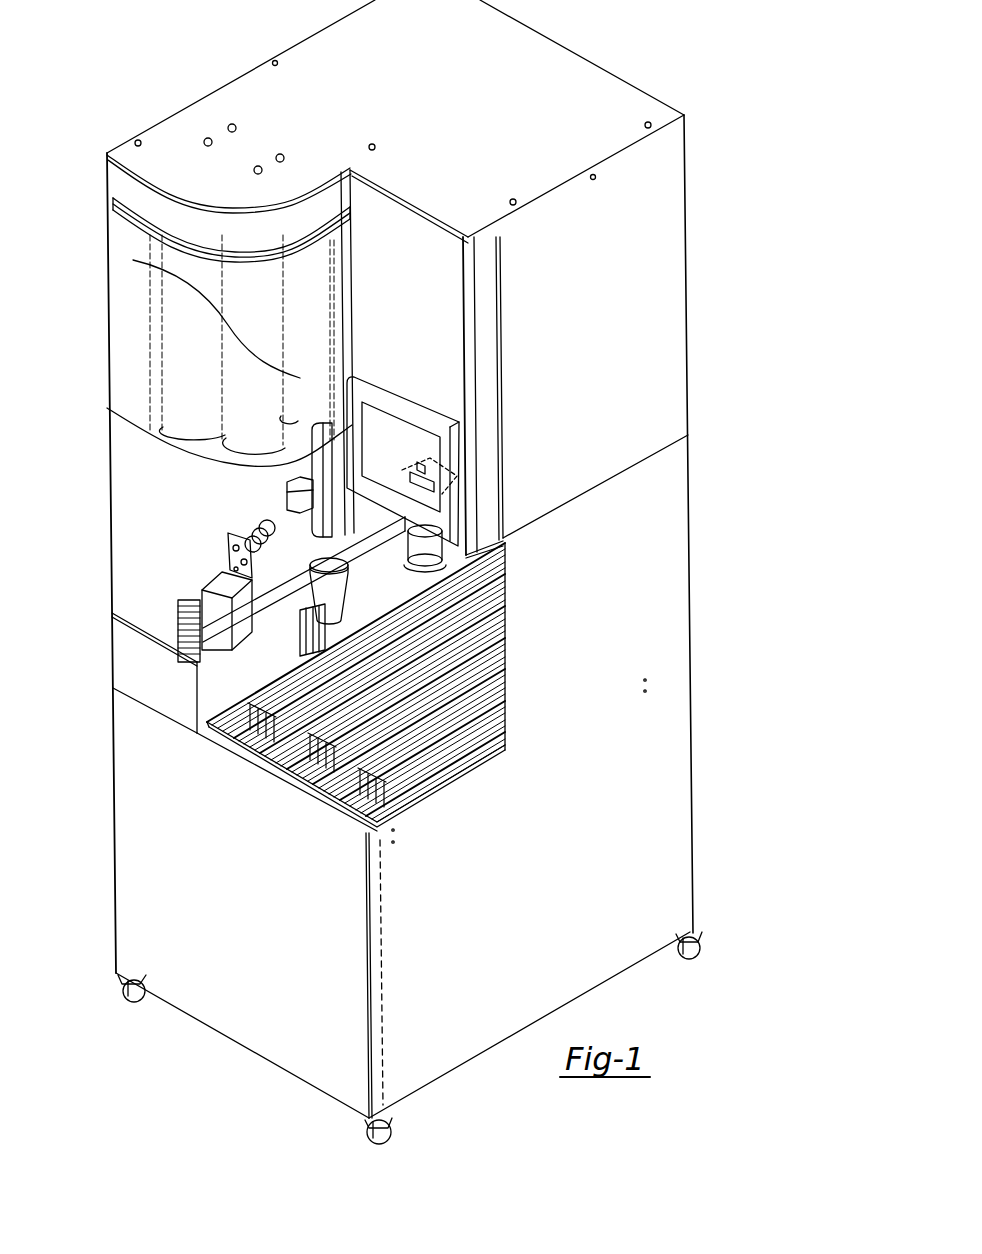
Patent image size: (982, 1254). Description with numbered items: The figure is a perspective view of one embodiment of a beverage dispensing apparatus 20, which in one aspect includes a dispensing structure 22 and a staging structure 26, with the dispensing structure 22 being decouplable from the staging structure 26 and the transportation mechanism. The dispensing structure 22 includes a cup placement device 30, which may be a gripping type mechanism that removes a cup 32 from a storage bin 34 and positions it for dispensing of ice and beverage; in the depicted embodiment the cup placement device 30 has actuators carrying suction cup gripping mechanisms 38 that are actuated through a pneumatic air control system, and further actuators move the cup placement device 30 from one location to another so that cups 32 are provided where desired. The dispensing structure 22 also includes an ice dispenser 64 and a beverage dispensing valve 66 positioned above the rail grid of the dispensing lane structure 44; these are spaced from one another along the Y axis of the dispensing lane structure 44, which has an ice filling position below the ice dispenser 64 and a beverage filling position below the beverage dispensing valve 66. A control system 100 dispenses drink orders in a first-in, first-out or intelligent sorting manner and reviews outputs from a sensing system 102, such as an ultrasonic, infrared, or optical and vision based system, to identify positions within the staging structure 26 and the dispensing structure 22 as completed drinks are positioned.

The beverage dispensing apparatus 20 is at (404, 572).
The dispensing structure 22 is at (222, 542).
The staging structure 26 is at (288, 757).
The cup placement device 30 is at (217, 582).
The cup 32 is at (333, 609).
The storage bin 34 is at (137, 415).
The suction cup gripping mechanisms 38 is at (272, 527).
The dispensing lane structure 44 is at (476, 560).
The ice dispenser 64 is at (290, 489).
The beverage dispensing valve 66 is at (390, 520).
The control system 100 is at (365, 374).
The sensing system 102 is at (421, 470).